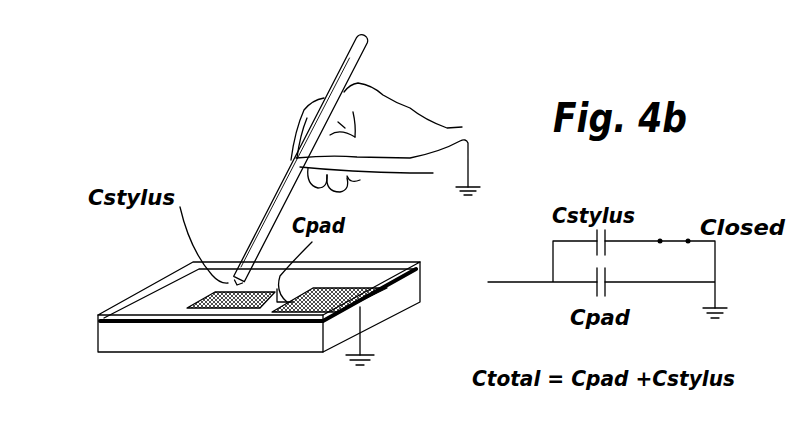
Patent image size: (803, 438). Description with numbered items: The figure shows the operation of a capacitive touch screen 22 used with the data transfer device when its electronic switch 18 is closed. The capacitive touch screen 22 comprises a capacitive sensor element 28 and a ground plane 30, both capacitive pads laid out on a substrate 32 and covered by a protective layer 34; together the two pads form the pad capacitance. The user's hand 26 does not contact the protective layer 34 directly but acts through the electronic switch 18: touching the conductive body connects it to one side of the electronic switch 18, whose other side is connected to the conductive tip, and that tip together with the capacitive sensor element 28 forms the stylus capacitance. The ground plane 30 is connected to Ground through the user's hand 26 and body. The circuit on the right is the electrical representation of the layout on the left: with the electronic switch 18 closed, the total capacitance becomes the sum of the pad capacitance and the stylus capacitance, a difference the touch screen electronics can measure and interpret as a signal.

The electronic switch 18 is at (263, 222).
The capacitive touch screen 22 is at (252, 331).
The user's hand 26 is at (401, 106).
The capacitive sensor element 28 is at (217, 294).
The ground plane 30 is at (343, 291).
The substrate 32 is at (149, 342).
The protective layer 34 is at (152, 290).